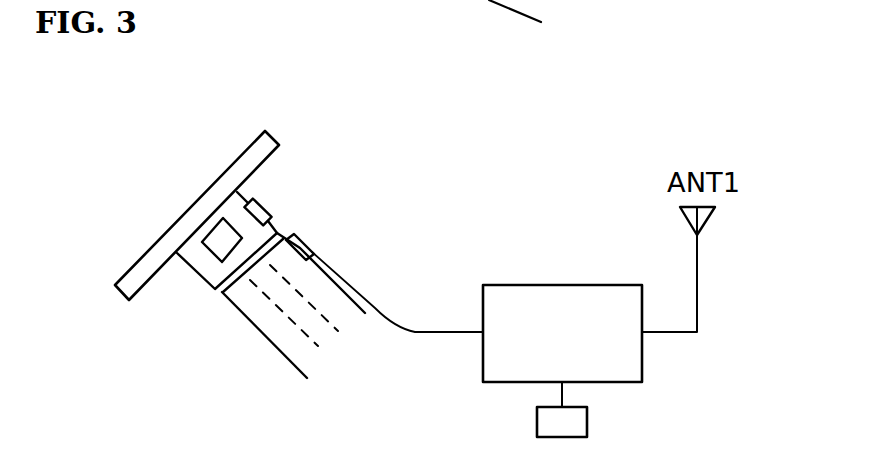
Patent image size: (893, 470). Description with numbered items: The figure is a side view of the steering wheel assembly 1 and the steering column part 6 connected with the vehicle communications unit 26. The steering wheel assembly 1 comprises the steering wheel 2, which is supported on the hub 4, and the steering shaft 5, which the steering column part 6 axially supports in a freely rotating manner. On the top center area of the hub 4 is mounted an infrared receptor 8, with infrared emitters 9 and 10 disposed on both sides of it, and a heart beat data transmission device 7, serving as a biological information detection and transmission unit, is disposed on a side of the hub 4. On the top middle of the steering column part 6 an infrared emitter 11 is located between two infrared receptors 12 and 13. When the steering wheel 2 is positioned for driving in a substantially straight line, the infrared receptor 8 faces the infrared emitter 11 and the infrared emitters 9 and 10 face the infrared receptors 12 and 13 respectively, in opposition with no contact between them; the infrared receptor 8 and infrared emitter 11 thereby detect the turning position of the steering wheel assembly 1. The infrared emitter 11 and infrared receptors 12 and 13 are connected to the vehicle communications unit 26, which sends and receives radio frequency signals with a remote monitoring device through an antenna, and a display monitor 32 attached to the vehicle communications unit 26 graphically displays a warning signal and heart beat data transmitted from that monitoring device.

The steering wheel assembly 1 is at (287, 231).
The steering wheel 2 is at (265, 137).
The hub 4 is at (197, 256).
The steering shaft 5 is at (276, 280).
The steering column part 6 is at (280, 333).
The heart beat data transmission device 7 is at (220, 252).
The infrared receptor 8 is at (338, 194).
The infrared emitter 9 is at (257, 212).
The infrared emitter 10 is at (262, 203).
The infrared emitter 11 is at (368, 266).
The infrared receptor 12 is at (321, 273).
The infrared receptor 13 is at (307, 246).
The vehicle communications unit 26 is at (572, 283).
The display monitor 32 is at (588, 417).